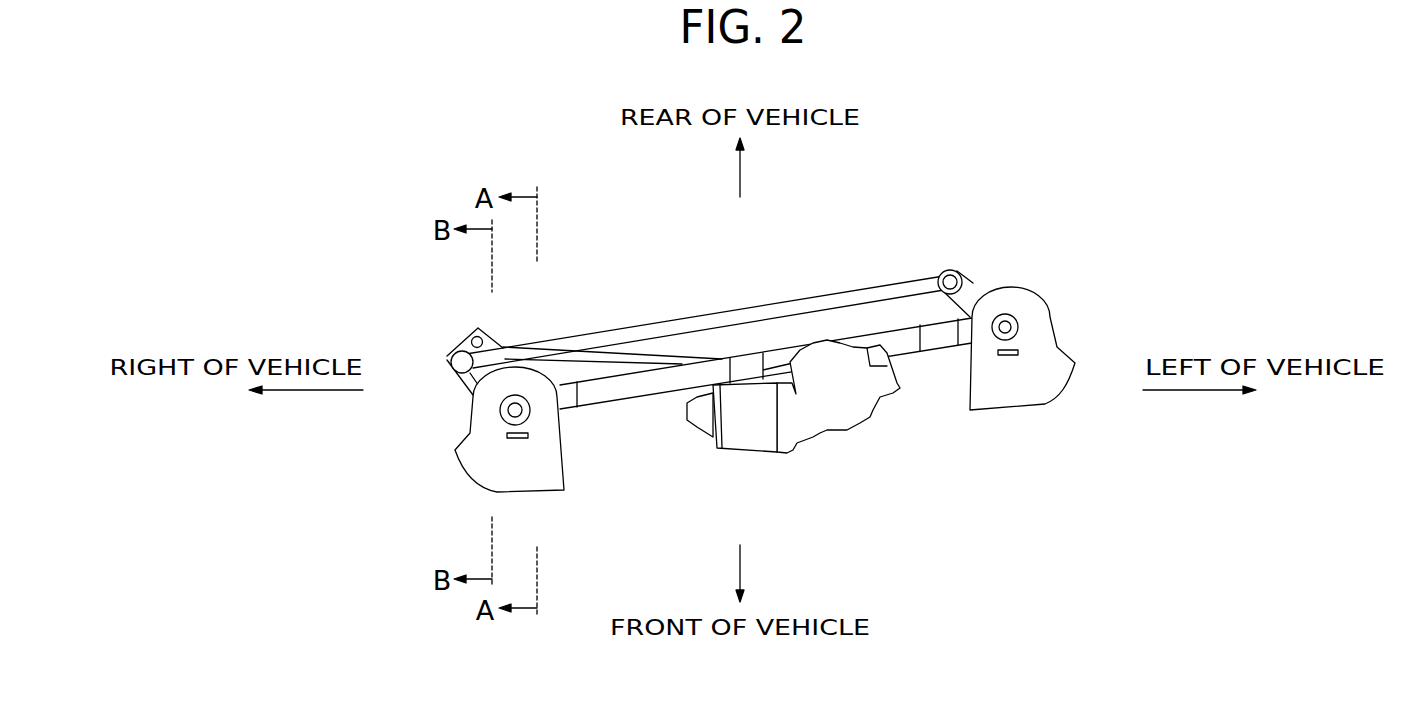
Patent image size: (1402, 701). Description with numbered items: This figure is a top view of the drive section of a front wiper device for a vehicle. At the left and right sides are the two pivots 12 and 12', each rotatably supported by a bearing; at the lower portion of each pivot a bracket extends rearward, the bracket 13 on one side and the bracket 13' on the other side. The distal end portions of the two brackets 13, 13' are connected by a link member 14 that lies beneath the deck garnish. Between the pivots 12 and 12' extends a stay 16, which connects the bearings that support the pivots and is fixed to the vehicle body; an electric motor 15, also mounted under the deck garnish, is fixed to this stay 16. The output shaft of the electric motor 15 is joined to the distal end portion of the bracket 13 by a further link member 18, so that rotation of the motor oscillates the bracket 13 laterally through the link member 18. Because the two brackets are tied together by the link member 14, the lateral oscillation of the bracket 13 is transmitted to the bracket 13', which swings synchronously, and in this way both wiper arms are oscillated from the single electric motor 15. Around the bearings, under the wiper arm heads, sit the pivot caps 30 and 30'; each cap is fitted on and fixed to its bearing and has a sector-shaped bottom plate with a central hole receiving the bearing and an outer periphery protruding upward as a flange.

The pivot 12 is at (559, 429).
The pivot 12' is at (1027, 293).
The bracket 13 is at (447, 348).
The bracket 13' is at (975, 259).
The link member 14 is at (791, 300).
The electric motor 15 is at (837, 437).
The stay 16 is at (648, 395).
The link member 18 is at (625, 355).
The pivot cap 30 is at (464, 440).
The pivot cap 30' is at (1022, 391).